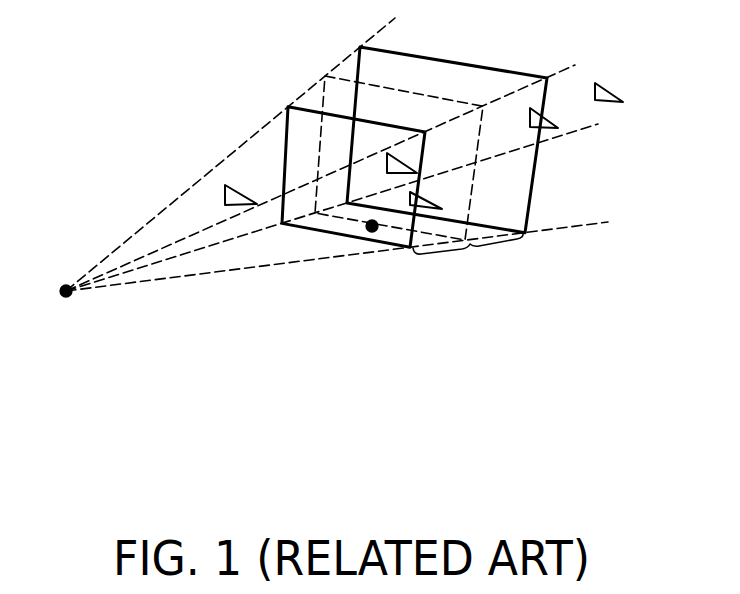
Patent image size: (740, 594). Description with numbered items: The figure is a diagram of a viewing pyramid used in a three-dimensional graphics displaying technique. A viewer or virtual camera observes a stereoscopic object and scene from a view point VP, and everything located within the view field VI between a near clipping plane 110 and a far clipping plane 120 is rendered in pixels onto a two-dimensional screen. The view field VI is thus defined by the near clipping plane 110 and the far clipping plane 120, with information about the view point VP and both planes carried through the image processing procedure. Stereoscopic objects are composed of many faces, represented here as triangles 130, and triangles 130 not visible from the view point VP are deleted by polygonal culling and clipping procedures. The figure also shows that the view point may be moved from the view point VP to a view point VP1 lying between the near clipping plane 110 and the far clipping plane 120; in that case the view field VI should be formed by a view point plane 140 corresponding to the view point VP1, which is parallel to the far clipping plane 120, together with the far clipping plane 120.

The near clipping plane 110 is at (410, 252).
The far clipping plane 120 is at (538, 158).
The triangles 130 is at (243, 194).
The view point plane 140 is at (327, 75).
The view point VP is at (47, 292).
The view point VP1 is at (372, 237).
The view field VI is at (468, 261).